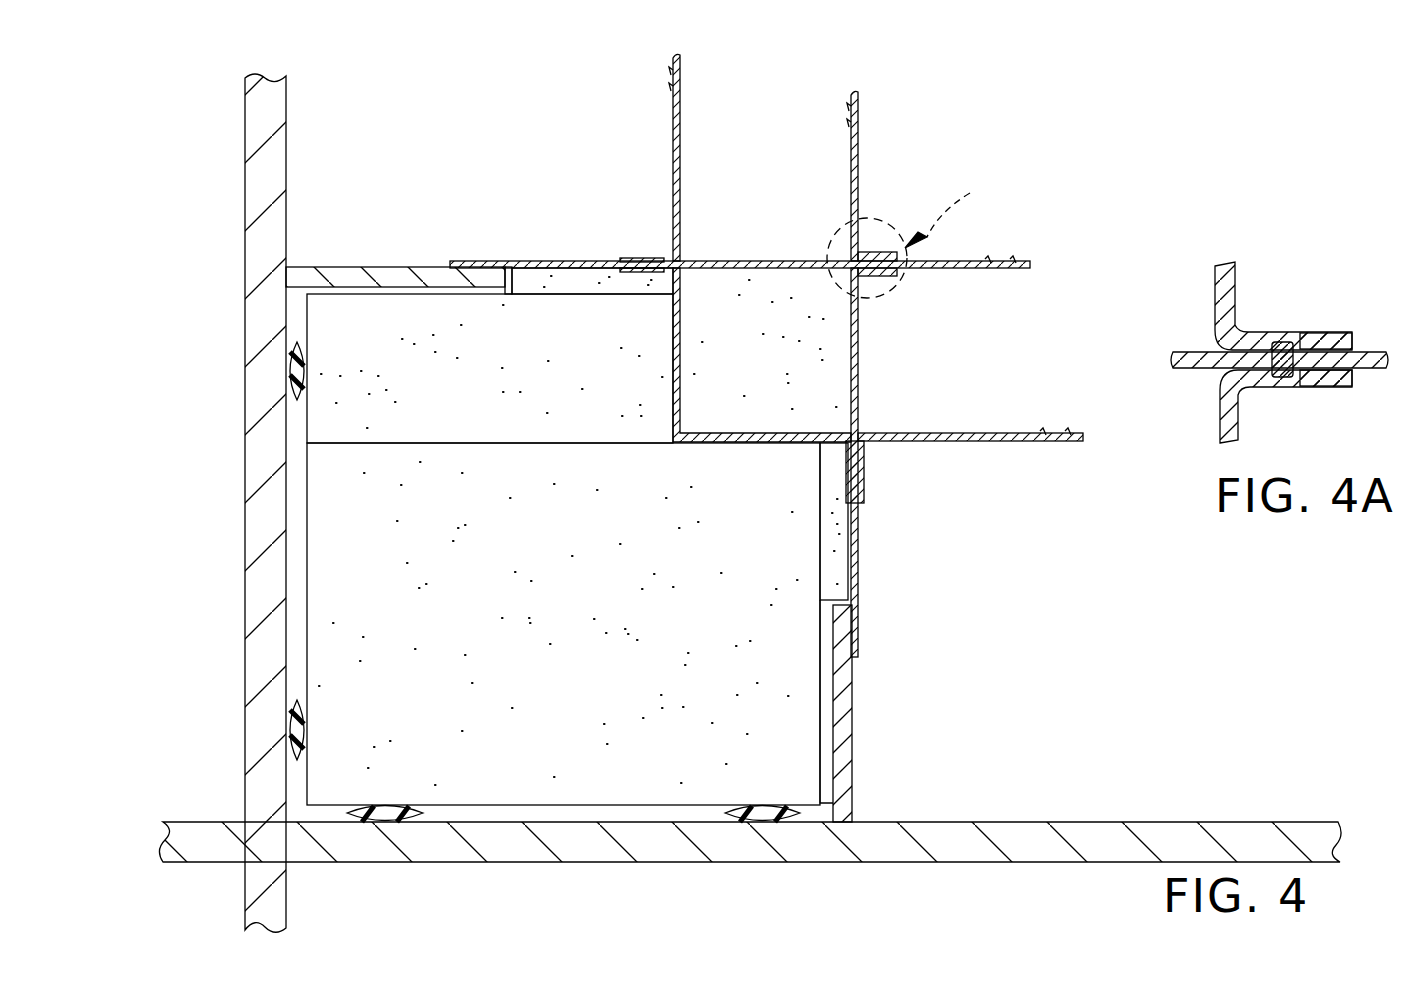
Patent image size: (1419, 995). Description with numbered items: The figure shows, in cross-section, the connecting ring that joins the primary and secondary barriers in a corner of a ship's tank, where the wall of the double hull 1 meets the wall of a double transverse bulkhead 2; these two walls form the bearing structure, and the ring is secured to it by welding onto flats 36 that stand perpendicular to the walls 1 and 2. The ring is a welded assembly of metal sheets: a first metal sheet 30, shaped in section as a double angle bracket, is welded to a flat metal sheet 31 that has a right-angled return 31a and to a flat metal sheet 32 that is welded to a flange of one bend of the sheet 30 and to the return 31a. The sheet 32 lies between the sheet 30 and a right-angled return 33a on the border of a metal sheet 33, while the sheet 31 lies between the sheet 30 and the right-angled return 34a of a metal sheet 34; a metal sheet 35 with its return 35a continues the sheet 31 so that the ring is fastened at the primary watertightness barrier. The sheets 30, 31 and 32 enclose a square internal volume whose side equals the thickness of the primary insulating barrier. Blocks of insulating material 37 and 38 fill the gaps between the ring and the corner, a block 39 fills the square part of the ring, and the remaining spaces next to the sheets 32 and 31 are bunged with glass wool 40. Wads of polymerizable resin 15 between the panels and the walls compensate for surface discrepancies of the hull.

In FIG. 4, the wall of the double hull 1 is at (1057, 846).
In FIG. 4, the wall of a double transverse bulkhead 2 is at (262, 158).
In FIG. 4, the wads of polymerizable resin 15 is at (425, 823).
In FIG. 4, the first metal sheet 30 is at (672, 385).
In FIG. 4, the flat metal sheet 31 is at (858, 368).
In FIG. 4A, the flat metal sheet 31 is at (1225, 415).
In FIG. 4, the right-angled return of metal sheet 31 31a is at (881, 277).
In FIG. 4A, the right-angled return of metal sheet 31 31a is at (1328, 384).
In FIG. 4, the flat metal sheet 32 is at (735, 261).
In FIG. 4A, the flat metal sheet 32 is at (1200, 360).
In FIG. 4, the metal sheet 33 is at (672, 146).
In FIG. 4, the right-angled return of metal sheet 33 33a is at (648, 259).
In FIG. 4, the metal sheet 34 is at (985, 432).
In FIG. 4, the right-angled return of metal sheet 34 34a is at (865, 470).
In FIG. 4, the metal sheet 35 is at (858, 158).
In FIG. 4A, the metal sheet 35 is at (1225, 296).
In FIG. 4, the right-angled return of metal sheet 35 35a is at (876, 252).
In FIG. 4A, the right-angled return of metal sheet 35 35a is at (1340, 343).
In FIG. 4, the flats 36 is at (430, 283).
In FIG. 4, the block of insulating material 37 is at (343, 603).
In FIG. 4, the block of insulating material 38 is at (333, 405).
In FIG. 4, the block of insulating material 39 is at (785, 300).
In FIG. 4, the glass wool 40 is at (558, 278).